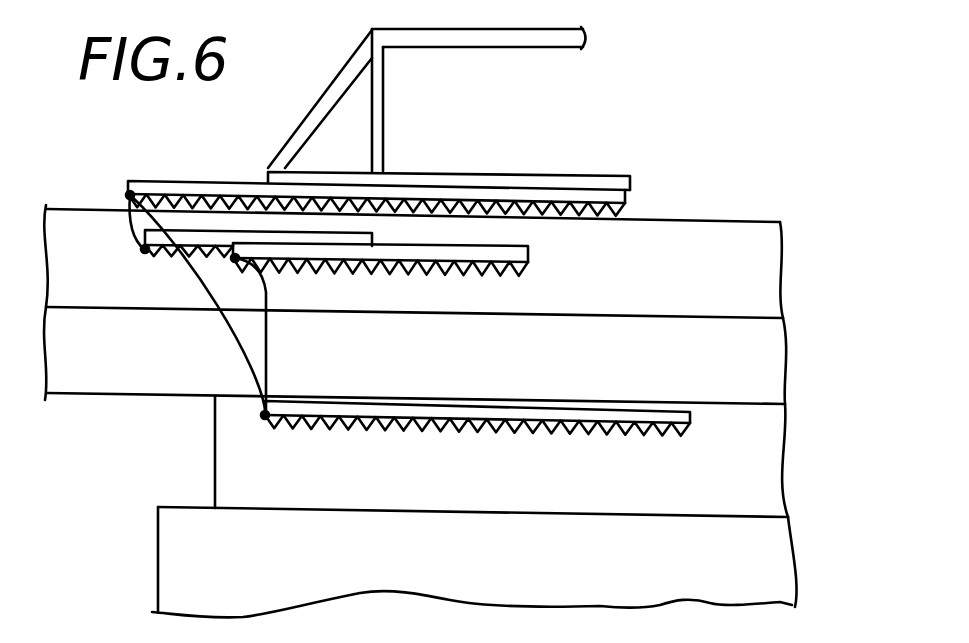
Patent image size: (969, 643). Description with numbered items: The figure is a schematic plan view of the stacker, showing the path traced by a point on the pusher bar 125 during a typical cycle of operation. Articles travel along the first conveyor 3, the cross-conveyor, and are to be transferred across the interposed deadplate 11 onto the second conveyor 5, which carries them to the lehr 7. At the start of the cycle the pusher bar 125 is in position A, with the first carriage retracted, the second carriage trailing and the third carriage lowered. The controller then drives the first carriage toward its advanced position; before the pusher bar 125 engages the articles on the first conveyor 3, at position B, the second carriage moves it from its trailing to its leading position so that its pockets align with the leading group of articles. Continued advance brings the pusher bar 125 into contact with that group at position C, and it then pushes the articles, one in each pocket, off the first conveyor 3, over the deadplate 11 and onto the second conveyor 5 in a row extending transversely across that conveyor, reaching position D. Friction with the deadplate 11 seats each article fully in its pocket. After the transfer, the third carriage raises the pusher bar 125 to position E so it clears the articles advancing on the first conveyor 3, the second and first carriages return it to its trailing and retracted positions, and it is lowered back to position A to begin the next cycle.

The first conveyor 3 is at (745, 277).
The deadplate 11 is at (762, 362).
The second conveyor 5 is at (740, 480).
The lehr 7 is at (202, 545).
The pusher bar 125 is at (627, 196).
The position A is at (128, 194).
The position B is at (145, 250).
The position C is at (235, 259).
The position D is at (402, 437).
The position E is at (265, 416).